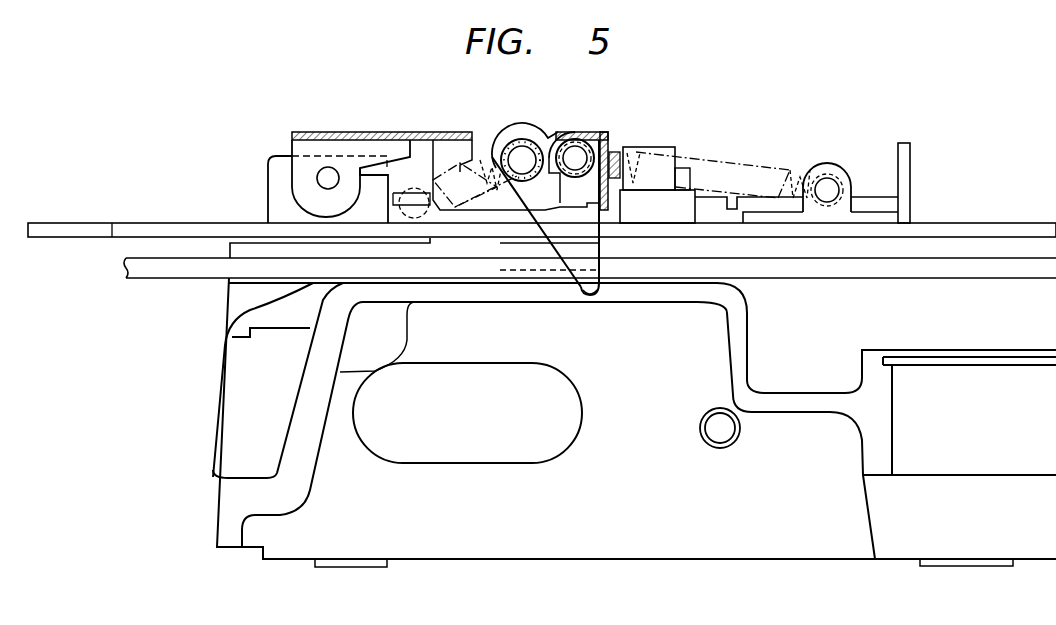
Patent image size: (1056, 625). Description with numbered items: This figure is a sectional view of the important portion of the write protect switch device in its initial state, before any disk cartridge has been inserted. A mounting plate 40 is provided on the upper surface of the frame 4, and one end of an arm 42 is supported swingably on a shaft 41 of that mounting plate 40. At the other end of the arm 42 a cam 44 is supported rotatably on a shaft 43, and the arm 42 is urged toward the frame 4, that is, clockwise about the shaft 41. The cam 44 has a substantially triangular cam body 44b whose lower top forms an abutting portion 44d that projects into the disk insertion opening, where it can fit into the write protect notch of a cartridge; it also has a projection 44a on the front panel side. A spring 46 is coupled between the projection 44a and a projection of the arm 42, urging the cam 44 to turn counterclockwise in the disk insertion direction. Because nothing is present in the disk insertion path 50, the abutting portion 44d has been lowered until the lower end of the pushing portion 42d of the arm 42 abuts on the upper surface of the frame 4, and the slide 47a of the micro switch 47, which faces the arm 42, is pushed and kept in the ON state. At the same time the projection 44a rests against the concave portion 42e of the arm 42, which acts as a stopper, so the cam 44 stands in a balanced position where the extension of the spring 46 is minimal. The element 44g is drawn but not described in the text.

The frame 4 is at (168, 222).
The mounting plate 40 is at (268, 178).
The shaft 41 is at (331, 166).
The arm 42 is at (410, 131).
The pushing portion 42d is at (600, 193).
The concave portion 42e is at (571, 138).
The shaft 43 is at (582, 148).
The cam 44 is at (545, 133).
The projection 44a is at (530, 140).
The cam body 44b is at (567, 263).
The abutting portion 44d is at (590, 298).
The bracket corner 44g is at (604, 284).
The spring 46 is at (471, 152).
The micro switch 47 is at (673, 157).
The slide 47a is at (627, 157).
The disk insertion path 50 is at (482, 272).